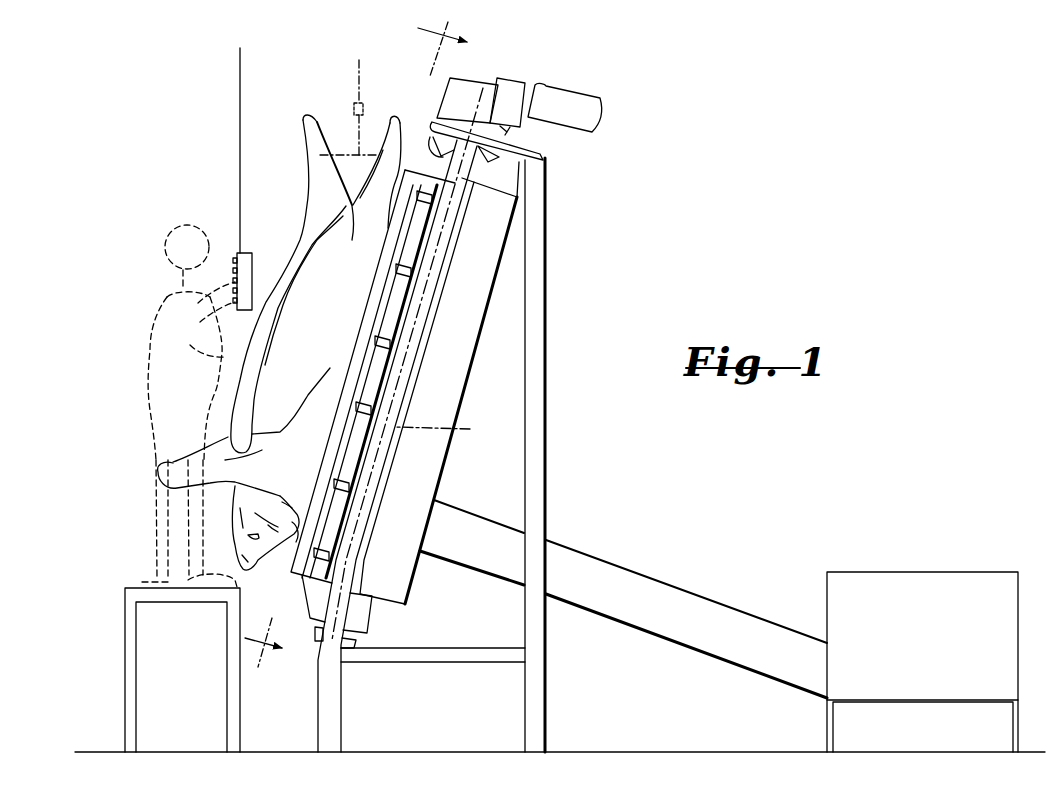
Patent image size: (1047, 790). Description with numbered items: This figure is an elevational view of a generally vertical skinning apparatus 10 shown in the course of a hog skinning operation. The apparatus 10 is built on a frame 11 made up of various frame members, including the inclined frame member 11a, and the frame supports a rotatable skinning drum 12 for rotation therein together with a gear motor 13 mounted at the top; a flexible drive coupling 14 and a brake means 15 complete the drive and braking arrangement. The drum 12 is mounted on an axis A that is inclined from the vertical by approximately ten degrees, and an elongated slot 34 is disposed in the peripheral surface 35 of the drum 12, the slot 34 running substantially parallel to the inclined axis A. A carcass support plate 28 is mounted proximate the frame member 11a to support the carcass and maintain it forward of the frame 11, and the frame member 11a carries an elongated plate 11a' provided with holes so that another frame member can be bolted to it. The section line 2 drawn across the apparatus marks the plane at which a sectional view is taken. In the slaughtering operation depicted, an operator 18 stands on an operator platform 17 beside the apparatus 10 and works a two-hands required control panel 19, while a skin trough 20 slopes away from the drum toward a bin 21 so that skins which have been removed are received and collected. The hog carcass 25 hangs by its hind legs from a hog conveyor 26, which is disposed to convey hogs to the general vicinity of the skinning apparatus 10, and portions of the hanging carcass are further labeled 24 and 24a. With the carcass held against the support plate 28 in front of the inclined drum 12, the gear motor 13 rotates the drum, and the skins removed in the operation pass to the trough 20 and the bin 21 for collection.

The skinning apparatus 10 is at (640, 262).
The frame 11 is at (549, 330).
The frame member 11a is at (400, 420).
The elongated plate 11a' is at (390, 638).
The rotatable skinning drum 12 is at (493, 216).
The gear motor 13 is at (554, 97).
The flexible drive coupling 14 is at (499, 158).
The brake means 15 is at (374, 614).
The operator platform 17 is at (140, 586).
The operator 18 is at (150, 362).
The two-hands required control panel 19 is at (238, 250).
The skin trough 20 is at (634, 572).
The bin 21 is at (950, 572).
The animal carcass 24 is at (352, 312).
The carcass flank 24a is at (280, 318).
The hog carcass 25 is at (283, 256).
The hog conveyor 26 is at (363, 98).
The carcass support plate 28 is at (401, 313).
The elongated slot 34 is at (405, 240).
The peripheral surface 35 is at (422, 484).
The axis A is at (441, 433).
The section line 2- 2 is at (356, 344).